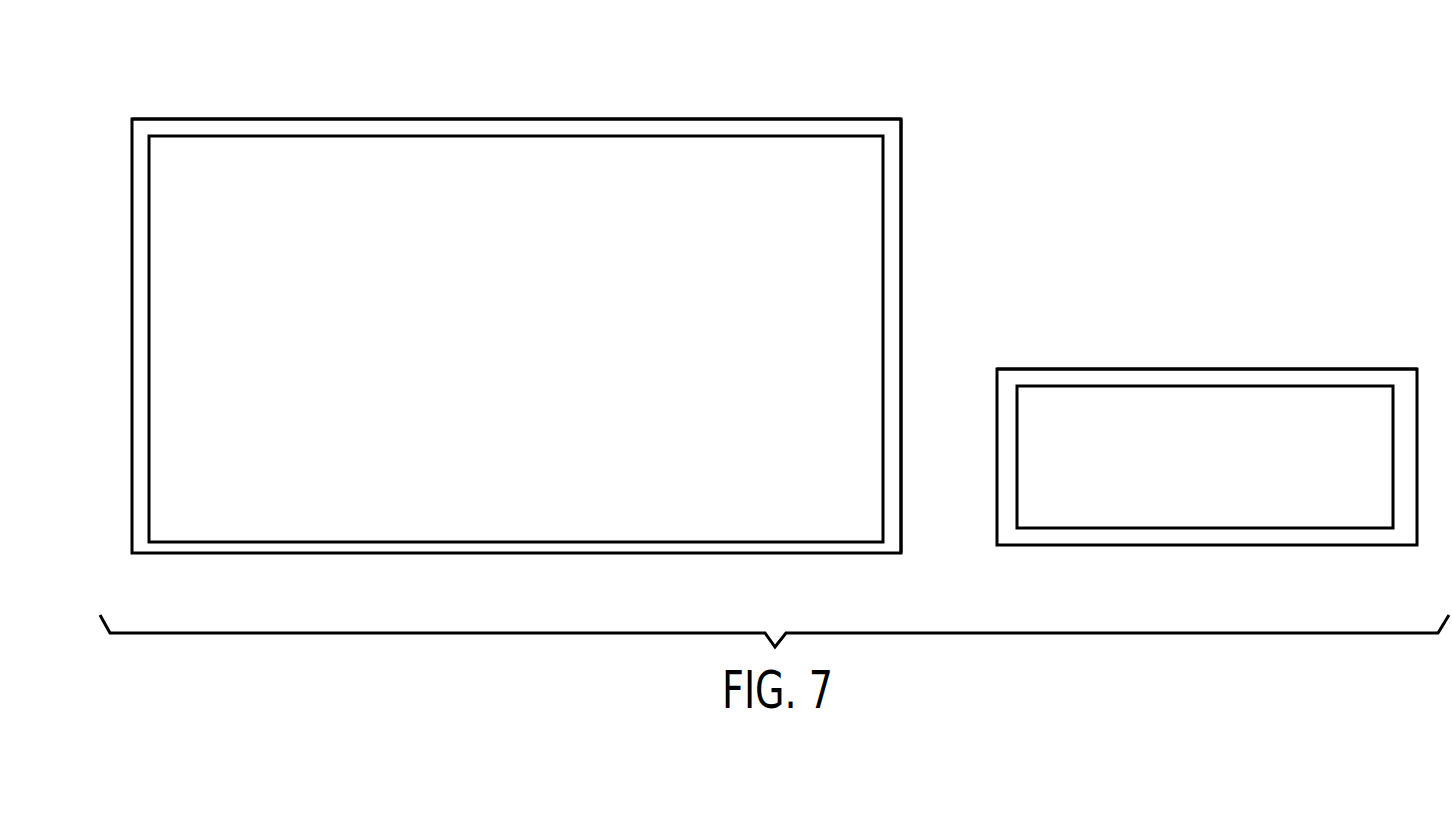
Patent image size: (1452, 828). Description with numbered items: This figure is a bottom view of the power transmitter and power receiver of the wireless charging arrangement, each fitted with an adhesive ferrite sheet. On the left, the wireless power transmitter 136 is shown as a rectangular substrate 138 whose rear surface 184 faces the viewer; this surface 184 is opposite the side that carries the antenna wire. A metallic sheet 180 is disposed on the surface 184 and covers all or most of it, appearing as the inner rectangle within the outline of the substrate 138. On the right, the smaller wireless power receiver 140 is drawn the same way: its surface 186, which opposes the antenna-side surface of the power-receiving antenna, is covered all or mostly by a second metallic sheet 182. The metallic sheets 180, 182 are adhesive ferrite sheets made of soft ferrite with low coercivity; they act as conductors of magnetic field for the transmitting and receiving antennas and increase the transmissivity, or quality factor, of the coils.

The wireless power transmitter 136 is at (470, 93).
The surface 184 is at (800, 123).
The substrate 138 is at (903, 227).
The metallic sheet 180 is at (885, 337).
The wireless power receiver 140 is at (1247, 348).
The surface 186 is at (1097, 378).
The metallic sheet 182 is at (1052, 386).